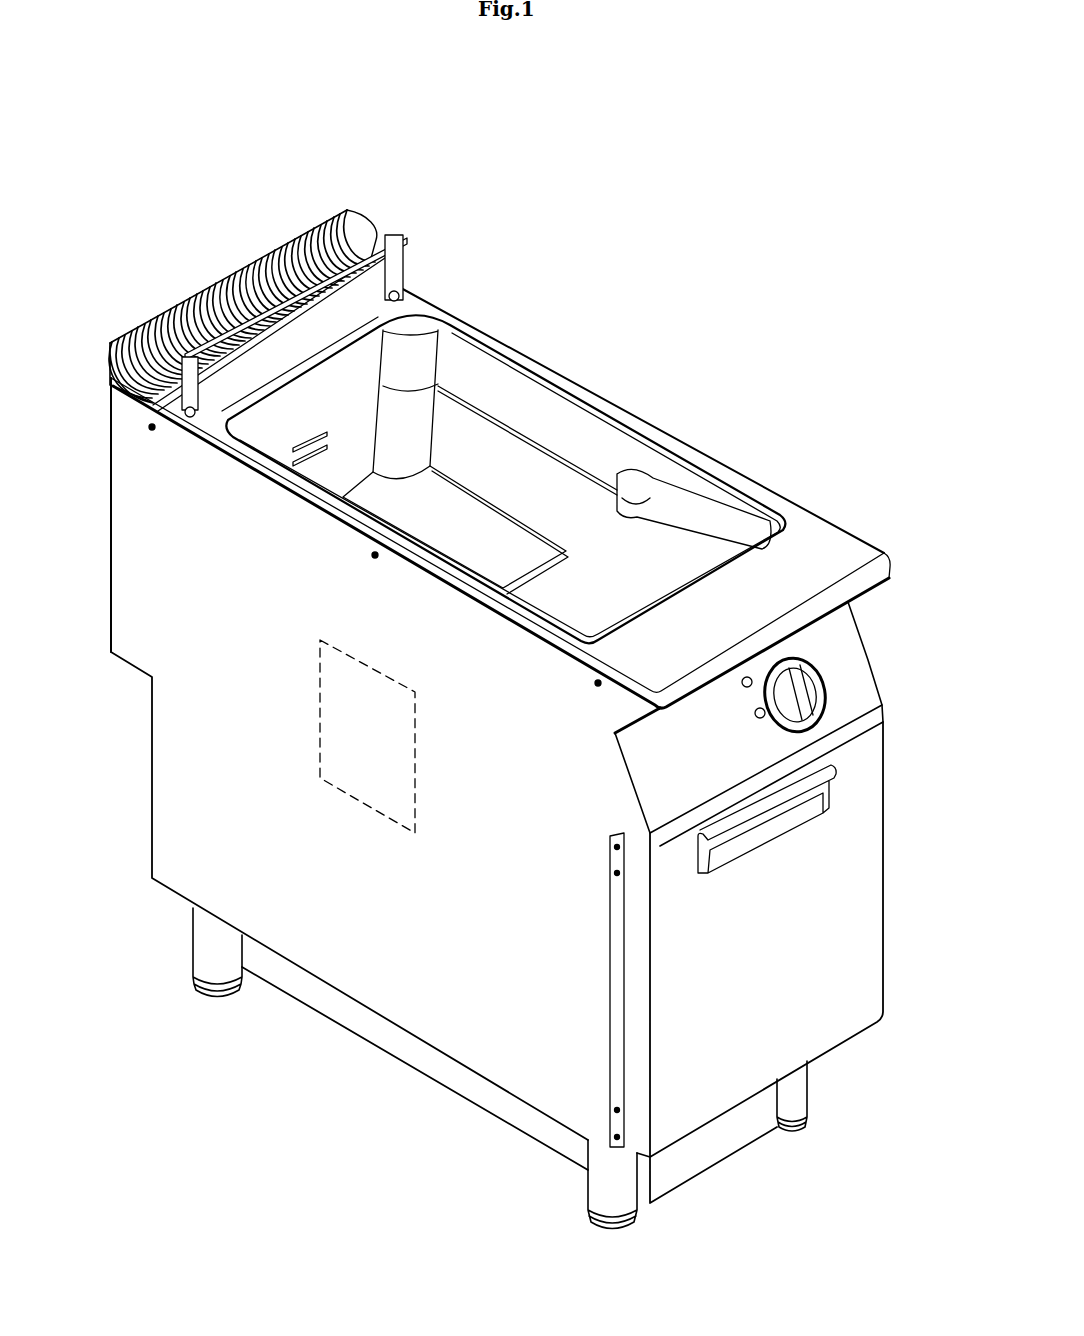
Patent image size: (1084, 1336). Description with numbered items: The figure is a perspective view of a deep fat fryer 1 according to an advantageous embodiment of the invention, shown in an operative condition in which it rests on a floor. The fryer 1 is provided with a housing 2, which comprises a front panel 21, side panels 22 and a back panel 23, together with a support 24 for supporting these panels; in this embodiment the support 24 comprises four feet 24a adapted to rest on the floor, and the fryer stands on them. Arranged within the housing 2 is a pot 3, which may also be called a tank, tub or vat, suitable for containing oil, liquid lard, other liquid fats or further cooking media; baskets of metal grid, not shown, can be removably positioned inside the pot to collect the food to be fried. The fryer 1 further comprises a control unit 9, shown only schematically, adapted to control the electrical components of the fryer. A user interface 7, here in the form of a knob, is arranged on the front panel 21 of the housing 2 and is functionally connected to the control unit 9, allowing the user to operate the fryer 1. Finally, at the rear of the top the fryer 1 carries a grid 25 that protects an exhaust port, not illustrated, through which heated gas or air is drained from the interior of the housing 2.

The deep fat fryer 1 is at (559, 306).
The housing 2 is at (503, 827).
The pot 3 is at (565, 435).
The user interface 7 is at (815, 668).
The control unit 9 is at (317, 689).
The front panel 21 is at (763, 922).
The side panels 22 is at (321, 759).
The back panel 23 is at (111, 590).
The support 24 is at (413, 1050).
The feet 24a is at (207, 943).
The grid 25 is at (247, 262).